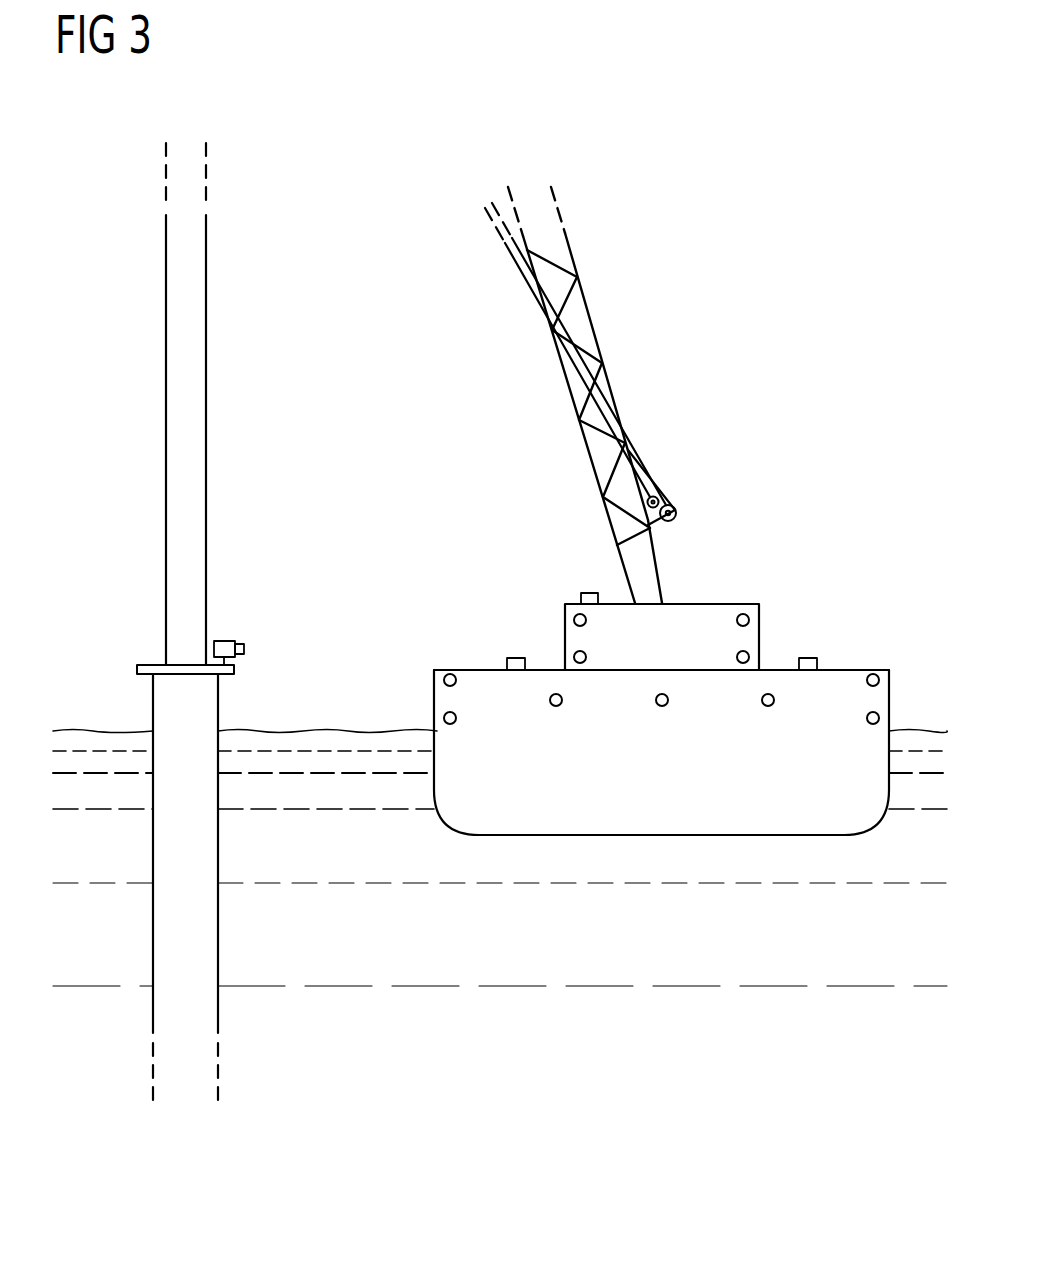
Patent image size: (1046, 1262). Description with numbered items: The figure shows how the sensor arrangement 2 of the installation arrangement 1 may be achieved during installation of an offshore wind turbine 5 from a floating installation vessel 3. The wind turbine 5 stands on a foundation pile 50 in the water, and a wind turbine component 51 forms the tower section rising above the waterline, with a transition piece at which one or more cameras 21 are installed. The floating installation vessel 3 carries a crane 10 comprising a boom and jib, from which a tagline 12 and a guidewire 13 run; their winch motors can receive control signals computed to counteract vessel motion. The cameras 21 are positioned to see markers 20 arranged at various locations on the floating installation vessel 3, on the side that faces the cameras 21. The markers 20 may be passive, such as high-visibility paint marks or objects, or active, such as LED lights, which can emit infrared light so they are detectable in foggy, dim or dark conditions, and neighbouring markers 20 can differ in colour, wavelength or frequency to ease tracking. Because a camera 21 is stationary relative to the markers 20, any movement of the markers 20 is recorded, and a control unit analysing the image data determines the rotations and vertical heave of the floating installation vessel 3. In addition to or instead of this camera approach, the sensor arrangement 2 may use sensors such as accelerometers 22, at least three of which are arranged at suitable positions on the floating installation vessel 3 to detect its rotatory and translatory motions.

The installation arrangement 1 is at (619, 395).
The crane 10 is at (590, 310).
The tagline 12 is at (645, 480).
The guidewire 13 is at (640, 443).
The sensor arrangement 2 is at (663, 688).
The markers 20 is at (745, 603).
The camera 21 is at (226, 640).
The accelerometers 22 is at (581, 597).
The floating installation vessel 3 is at (853, 668).
The offshore wind turbine 5 is at (197, 625).
The monopile 50 is at (177, 845).
The wind turbine component 51 is at (178, 493).